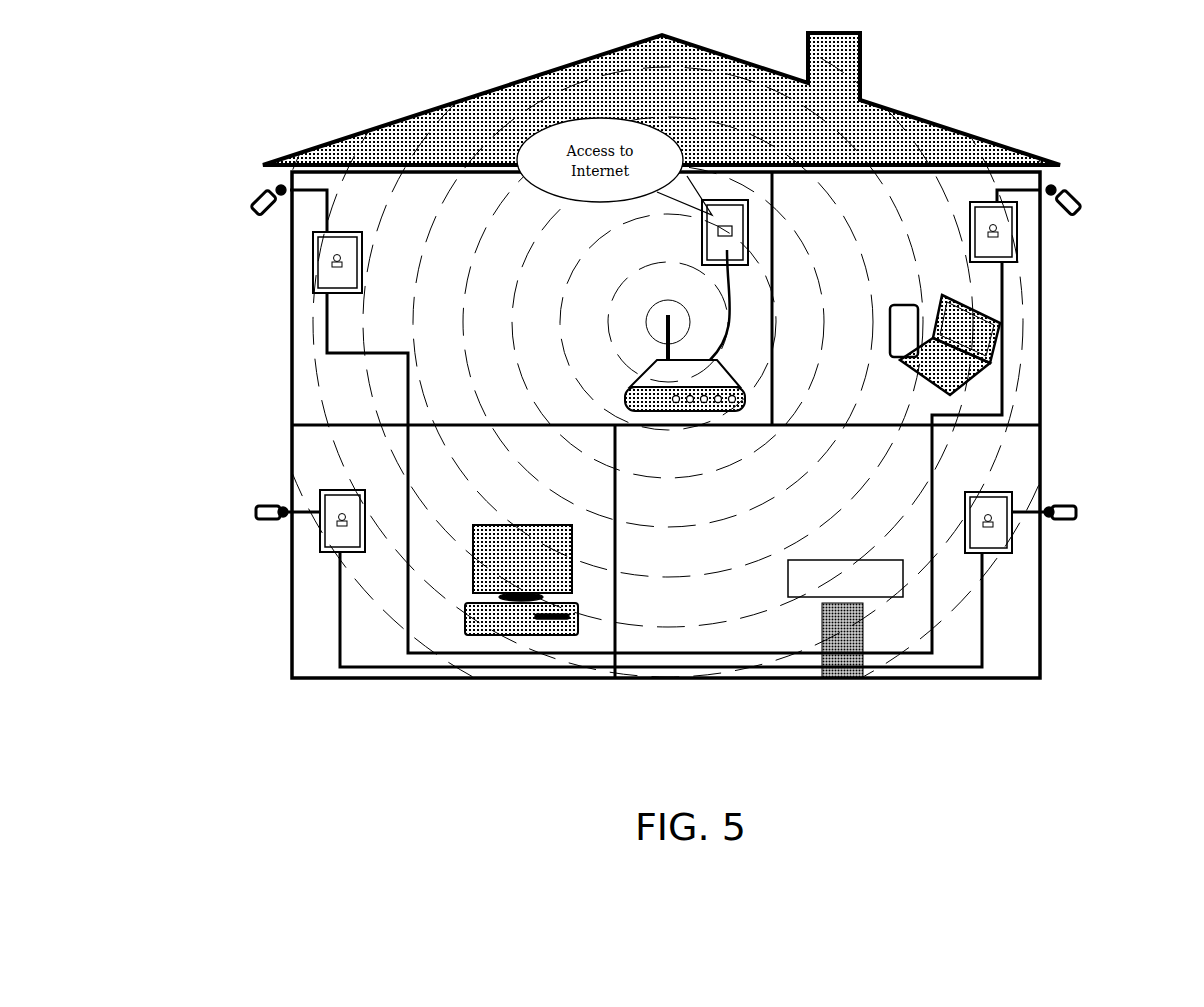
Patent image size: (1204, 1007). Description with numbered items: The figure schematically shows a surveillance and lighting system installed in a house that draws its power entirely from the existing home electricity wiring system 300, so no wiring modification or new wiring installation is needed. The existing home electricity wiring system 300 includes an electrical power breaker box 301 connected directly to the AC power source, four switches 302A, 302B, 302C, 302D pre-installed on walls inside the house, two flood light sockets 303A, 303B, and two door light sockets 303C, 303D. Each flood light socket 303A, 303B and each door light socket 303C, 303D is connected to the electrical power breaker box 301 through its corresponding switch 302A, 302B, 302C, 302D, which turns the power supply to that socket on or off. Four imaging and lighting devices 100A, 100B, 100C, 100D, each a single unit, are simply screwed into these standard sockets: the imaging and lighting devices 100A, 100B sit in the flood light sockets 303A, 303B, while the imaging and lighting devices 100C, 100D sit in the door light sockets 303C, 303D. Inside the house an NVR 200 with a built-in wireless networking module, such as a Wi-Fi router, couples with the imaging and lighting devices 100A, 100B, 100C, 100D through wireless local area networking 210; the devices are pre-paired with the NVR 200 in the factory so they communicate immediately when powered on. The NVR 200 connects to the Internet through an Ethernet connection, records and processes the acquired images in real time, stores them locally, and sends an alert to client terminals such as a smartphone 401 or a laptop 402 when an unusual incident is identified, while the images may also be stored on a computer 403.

The wireless local area networking 210 is at (518, 292).
The NVR 200 is at (645, 378).
The existing home electricity wiring system 300 is at (407, 640).
The electrical power breaker box 301 is at (846, 680).
The switch 302A is at (335, 283).
The switch 302B is at (1005, 262).
The switch 302C is at (330, 540).
The switch 302D is at (1000, 553).
The flood light socket 303A is at (277, 188).
The flood light socket 303B is at (1055, 187).
The door light socket 303C is at (280, 510).
The door light socket 303D is at (1052, 525).
The imaging and lighting device 100A is at (262, 207).
The imaging and lighting device 100B is at (1070, 205).
The imaging and lighting device 100C is at (264, 520).
The imaging and lighting device 100D is at (1068, 517).
The smartphone 401 is at (975, 382).
The laptop 402 is at (908, 348).
The computer 403 is at (535, 638).